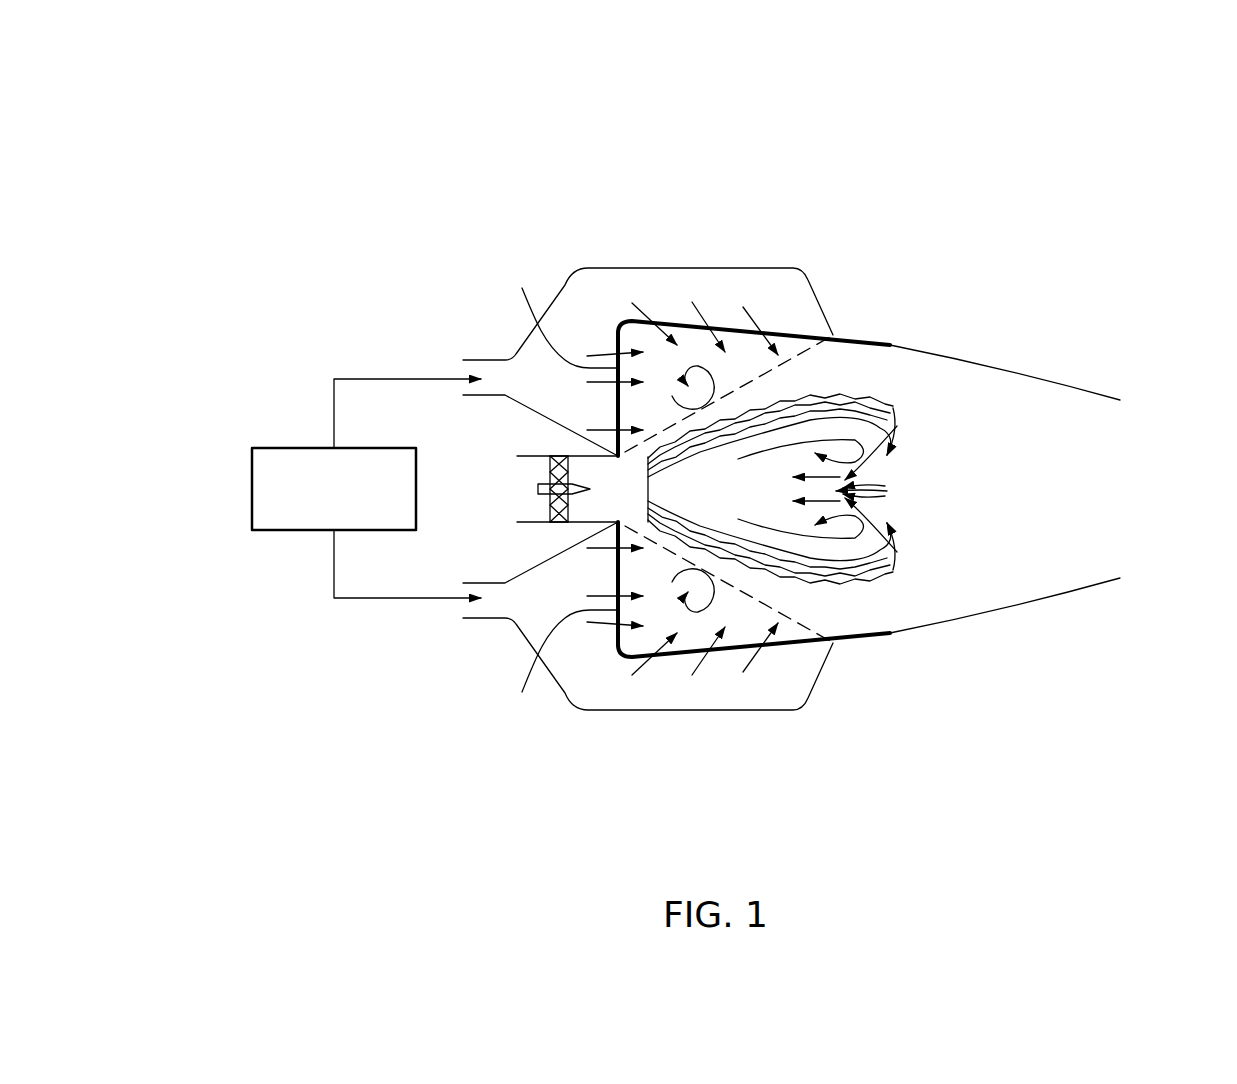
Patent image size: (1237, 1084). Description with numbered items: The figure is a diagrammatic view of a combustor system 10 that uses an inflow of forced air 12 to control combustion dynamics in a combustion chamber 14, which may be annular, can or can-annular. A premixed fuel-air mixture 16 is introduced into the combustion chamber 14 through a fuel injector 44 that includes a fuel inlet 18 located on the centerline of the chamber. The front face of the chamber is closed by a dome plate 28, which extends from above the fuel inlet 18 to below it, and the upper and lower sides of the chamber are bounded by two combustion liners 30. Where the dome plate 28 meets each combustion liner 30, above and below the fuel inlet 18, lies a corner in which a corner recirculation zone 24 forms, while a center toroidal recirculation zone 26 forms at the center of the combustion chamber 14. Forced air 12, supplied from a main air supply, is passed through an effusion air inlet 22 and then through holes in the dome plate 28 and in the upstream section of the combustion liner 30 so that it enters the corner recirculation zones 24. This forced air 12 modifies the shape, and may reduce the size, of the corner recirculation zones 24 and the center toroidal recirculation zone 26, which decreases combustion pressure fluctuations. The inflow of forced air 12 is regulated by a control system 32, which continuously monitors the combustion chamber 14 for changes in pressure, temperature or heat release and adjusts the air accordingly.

The combustor system 10 is at (1122, 192).
The forced air 12 is at (743, 307).
The combustion chamber 14 is at (982, 518).
The premixed fuel-air mixture 16 is at (872, 582).
The fuel inlet 18 is at (538, 489).
The effusion air inlet 22 is at (467, 368).
The corner recirculation zones 24 is at (678, 373).
The center toroidal recirculation zone 26 is at (760, 500).
The dome plate 28 is at (564, 490).
The combustion liner 30 is at (845, 337).
The control system 32 is at (252, 486).
The fuel injector 44 is at (503, 443).